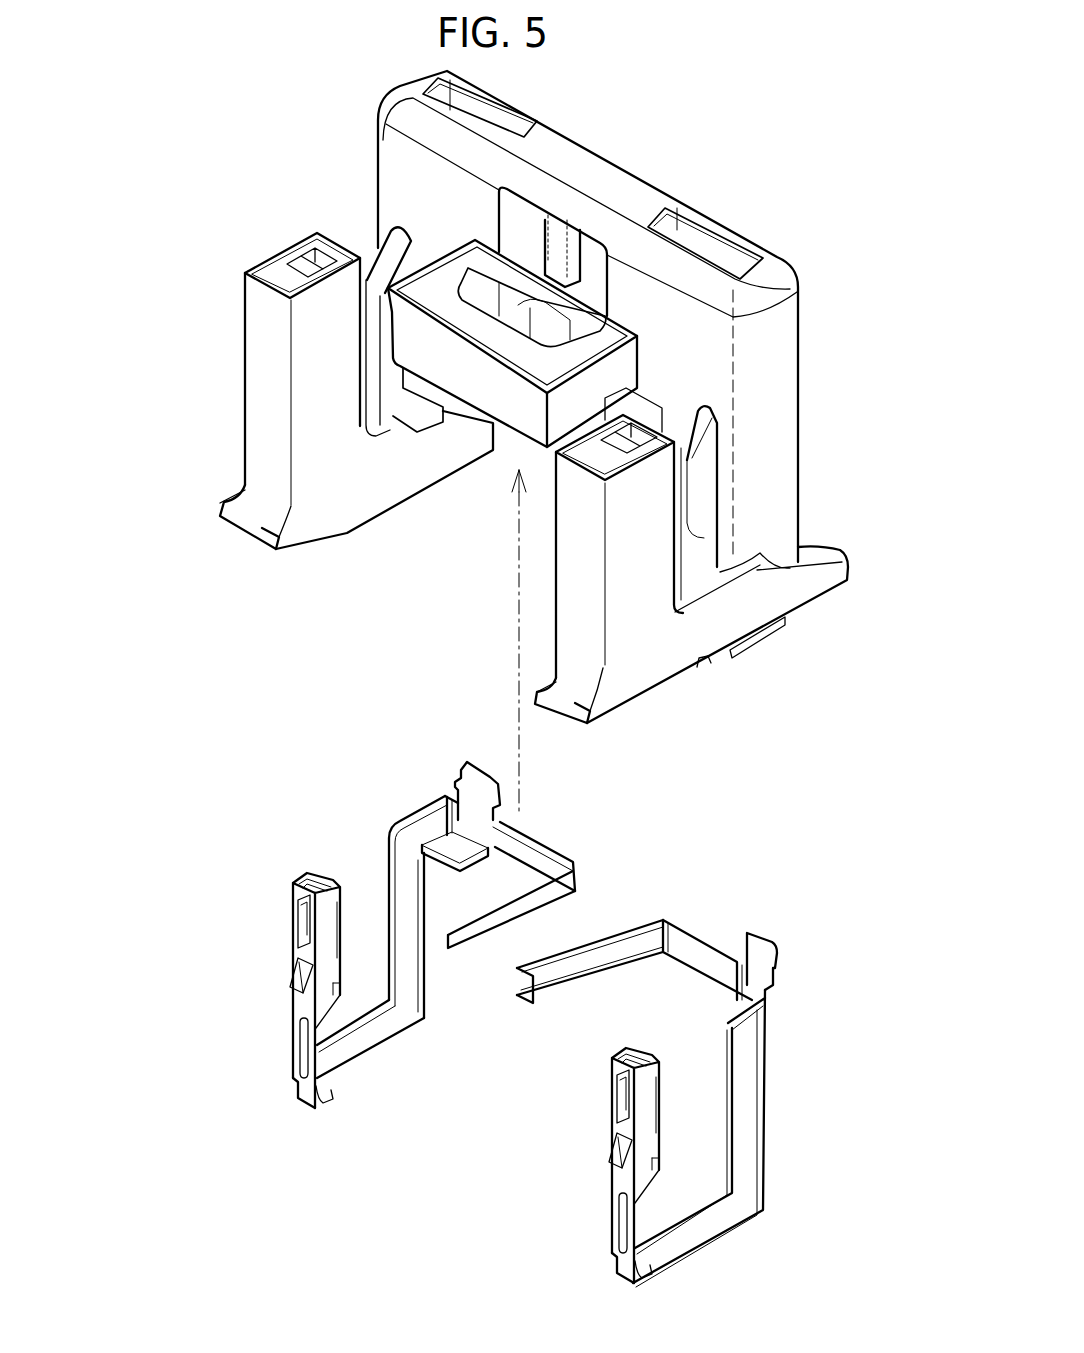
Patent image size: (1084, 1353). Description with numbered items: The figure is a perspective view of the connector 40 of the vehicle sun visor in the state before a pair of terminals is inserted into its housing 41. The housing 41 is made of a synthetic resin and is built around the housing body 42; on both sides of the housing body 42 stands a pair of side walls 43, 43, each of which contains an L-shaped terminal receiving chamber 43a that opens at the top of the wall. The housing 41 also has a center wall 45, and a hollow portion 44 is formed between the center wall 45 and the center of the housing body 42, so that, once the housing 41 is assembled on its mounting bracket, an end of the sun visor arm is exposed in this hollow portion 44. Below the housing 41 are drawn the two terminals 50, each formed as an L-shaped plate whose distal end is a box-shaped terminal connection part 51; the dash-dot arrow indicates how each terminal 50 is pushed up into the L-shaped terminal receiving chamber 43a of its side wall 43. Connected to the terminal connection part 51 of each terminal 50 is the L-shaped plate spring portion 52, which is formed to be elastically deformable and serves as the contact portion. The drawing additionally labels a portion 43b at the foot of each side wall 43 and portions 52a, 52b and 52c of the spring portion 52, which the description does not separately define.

The connector 40 is at (487, 394).
The housing 41 is at (391, 78).
The housing body 42 is at (592, 148).
The side wall 43 is at (242, 362).
The L-shaped terminal receiving chamber 43a is at (318, 262).
The flange portion 43b is at (247, 526).
The hollow portion 44 is at (570, 322).
The center wall 45 is at (432, 292).
The terminal 50 is at (536, 992).
The terminal connection part 51 is at (292, 904).
The spring portion 52 is at (547, 834).
The locking tab 52a is at (476, 822).
The bent portion 52b is at (578, 888).
The end portion 52c is at (468, 950).